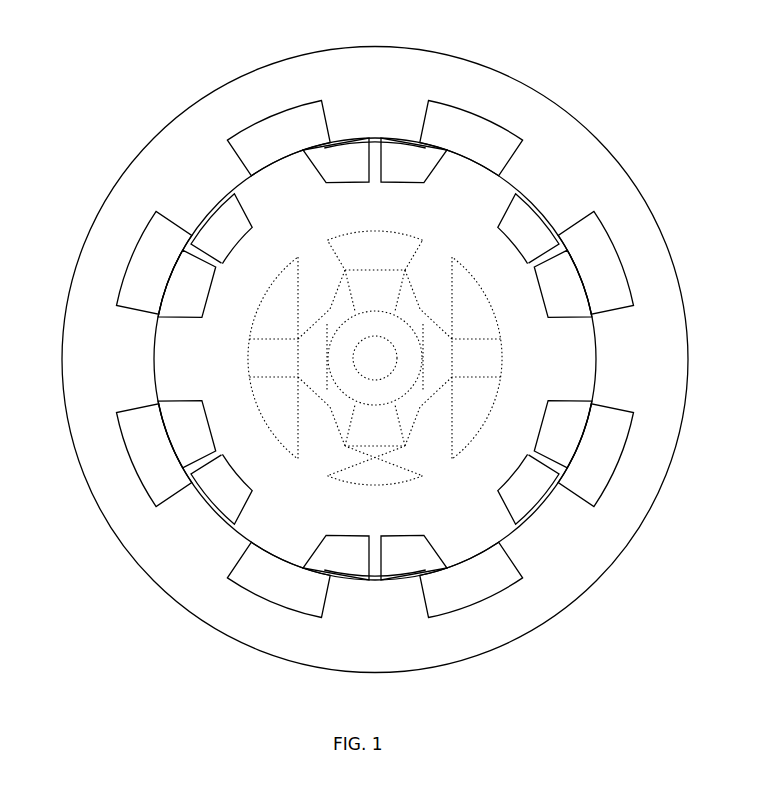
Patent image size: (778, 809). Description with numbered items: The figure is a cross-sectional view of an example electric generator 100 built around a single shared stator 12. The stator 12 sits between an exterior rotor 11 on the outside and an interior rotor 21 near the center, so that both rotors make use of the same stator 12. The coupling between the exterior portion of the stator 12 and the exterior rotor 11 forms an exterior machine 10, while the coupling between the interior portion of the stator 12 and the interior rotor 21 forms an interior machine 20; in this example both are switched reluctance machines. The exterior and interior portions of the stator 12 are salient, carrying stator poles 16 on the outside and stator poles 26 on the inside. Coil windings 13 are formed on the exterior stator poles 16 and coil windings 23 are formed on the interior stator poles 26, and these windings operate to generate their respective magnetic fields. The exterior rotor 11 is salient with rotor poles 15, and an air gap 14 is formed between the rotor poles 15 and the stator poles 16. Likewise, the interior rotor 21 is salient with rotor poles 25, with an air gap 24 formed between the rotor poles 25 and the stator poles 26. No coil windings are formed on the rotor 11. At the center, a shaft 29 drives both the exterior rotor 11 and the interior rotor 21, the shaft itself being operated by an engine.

The electric generator 100 is at (121, 62).
The exterior machine 10 is at (80, 182).
The exterior rotor 11 is at (366, 664).
The stator 12 is at (305, 522).
The coil windings 13 is at (437, 574).
The air gap 14 is at (202, 508).
The rotor poles 15 is at (235, 568).
The stator poles 16 is at (241, 512).
The interior machine 20 is at (440, 218).
The interior rotor 21 is at (345, 333).
The coil windings 23 is at (401, 478).
The air gap 24 is at (418, 423).
The rotor poles 25 is at (318, 405).
The stator poles 26 is at (342, 430).
The shaft 29 is at (372, 346).